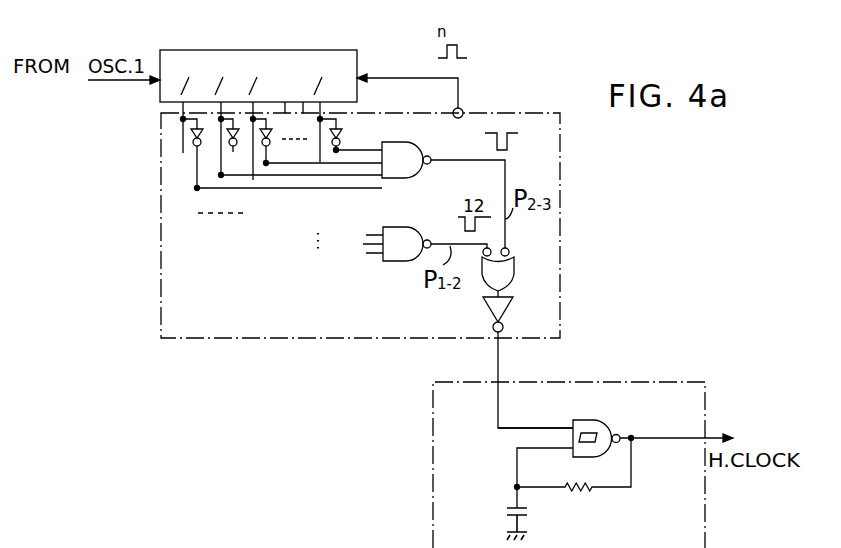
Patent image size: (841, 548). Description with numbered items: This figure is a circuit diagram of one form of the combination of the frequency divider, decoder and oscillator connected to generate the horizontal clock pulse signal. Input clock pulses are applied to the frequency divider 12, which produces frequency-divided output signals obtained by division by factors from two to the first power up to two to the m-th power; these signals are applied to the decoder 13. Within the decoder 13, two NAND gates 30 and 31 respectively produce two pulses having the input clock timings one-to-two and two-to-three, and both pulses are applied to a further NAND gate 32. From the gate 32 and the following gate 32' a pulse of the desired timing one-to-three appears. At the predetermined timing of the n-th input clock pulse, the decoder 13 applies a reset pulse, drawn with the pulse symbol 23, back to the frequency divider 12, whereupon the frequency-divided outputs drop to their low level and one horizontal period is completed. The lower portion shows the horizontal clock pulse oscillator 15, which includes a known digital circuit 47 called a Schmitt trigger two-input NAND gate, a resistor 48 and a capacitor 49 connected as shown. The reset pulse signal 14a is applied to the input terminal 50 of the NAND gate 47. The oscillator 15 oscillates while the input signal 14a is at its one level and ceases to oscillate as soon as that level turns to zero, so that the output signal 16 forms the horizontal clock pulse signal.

The frequency divider 12 is at (366, 50).
The decoder 13 is at (160, 192).
The reset pulse signal 14a is at (497, 366).
The horizontal clock pulse oscillator 15 is at (433, 431).
The output signal 16 is at (655, 437).
The pulse 23 is at (501, 132).
The NAND gate 30 is at (410, 142).
The NAND gate 31 is at (397, 206).
The NAND gate 32 is at (518, 266).
The gate 32' is at (521, 303).
The Schmitt trigger 2-input NAND gate 47 is at (587, 420).
The resistor 48 is at (577, 491).
The capacitor 49 is at (506, 509).
The input terminal 50 is at (529, 428).